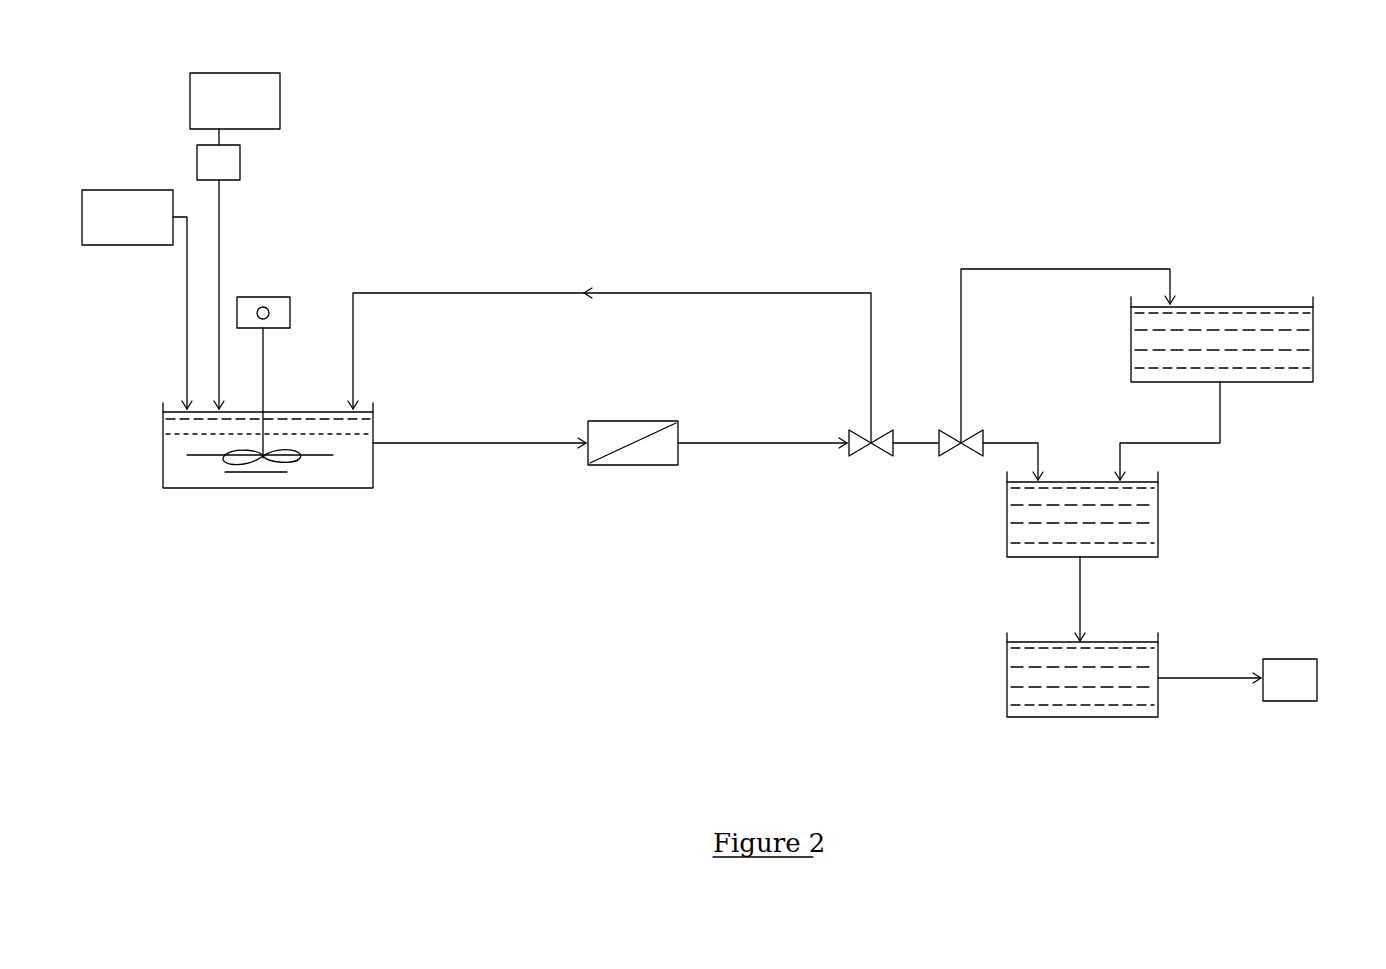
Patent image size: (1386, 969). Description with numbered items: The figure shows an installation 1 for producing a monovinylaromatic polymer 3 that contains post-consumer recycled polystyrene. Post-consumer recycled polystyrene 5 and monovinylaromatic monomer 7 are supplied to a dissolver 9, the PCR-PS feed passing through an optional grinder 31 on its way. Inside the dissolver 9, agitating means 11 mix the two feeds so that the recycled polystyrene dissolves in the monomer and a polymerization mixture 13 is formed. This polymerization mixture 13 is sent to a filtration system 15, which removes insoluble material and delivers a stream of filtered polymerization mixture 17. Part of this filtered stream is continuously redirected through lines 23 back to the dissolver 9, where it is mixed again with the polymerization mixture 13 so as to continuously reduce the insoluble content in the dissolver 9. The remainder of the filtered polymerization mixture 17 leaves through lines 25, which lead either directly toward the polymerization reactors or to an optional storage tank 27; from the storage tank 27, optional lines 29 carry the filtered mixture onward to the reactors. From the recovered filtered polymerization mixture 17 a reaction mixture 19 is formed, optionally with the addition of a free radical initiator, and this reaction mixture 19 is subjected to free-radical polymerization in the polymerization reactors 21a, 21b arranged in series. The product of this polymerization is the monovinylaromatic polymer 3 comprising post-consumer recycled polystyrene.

The installation 1 is at (912, 185).
The monovinylaromatic polymer 3 is at (1237, 680).
The post-consumer recycled polystyrene 5 is at (262, 103).
The monovinylaromatic monomer 7 is at (125, 201).
The dissolver 9 is at (163, 441).
The agitating means 11 is at (275, 305).
The polymerization mixture 13 is at (183, 473).
The filtration system 15 is at (625, 466).
The filtered polymerization mixture 17 is at (458, 446).
The reaction mixture 19 is at (1018, 538).
The polymerization reactor 21a is at (1138, 522).
The polymerization reactor 21b is at (1005, 695).
The lines 23 is at (874, 362).
The lines 25 is at (1082, 267).
The storage tank 27 is at (1298, 362).
The lines 29 is at (1222, 418).
The grinder 31 is at (232, 166).